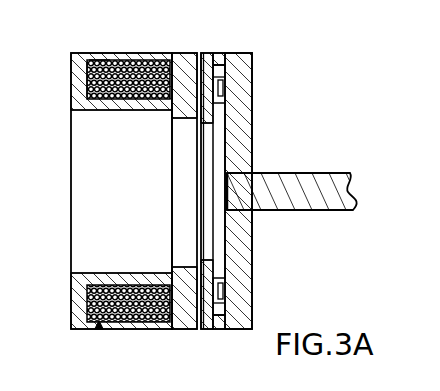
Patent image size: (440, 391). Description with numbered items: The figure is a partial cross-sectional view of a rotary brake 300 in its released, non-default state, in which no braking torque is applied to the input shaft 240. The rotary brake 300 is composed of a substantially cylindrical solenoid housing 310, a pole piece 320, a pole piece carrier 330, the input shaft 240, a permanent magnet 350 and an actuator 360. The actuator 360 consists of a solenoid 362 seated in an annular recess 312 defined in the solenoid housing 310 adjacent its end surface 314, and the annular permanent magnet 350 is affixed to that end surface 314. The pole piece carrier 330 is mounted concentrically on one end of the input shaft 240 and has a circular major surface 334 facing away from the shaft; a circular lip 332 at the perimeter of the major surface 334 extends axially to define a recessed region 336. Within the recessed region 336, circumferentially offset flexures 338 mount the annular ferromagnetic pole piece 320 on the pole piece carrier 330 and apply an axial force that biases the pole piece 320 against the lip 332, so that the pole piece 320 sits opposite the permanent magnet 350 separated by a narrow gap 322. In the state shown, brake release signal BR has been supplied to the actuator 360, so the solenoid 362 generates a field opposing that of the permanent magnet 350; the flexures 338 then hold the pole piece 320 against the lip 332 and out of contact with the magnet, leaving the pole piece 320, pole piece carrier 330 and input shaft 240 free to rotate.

The rotary brake 300 is at (262, 50).
The solenoid housing 310 is at (82, 100).
The annular recess 312 is at (143, 62).
The end surface 314 is at (175, 331).
The pole piece 320 is at (207, 329).
The gap 322 is at (201, 329).
The pole piece carrier 330 is at (247, 113).
The lip 332 is at (220, 57).
The major surface 334 is at (218, 233).
The recessed region 336 is at (226, 155).
The flexures 338 is at (226, 87).
The permanent magnet 350 is at (193, 62).
The actuator 360 is at (86, 76).
The solenoid 362 is at (95, 62).
The input shaft 240 is at (338, 211).
The brake release signal BR is at (100, 351).